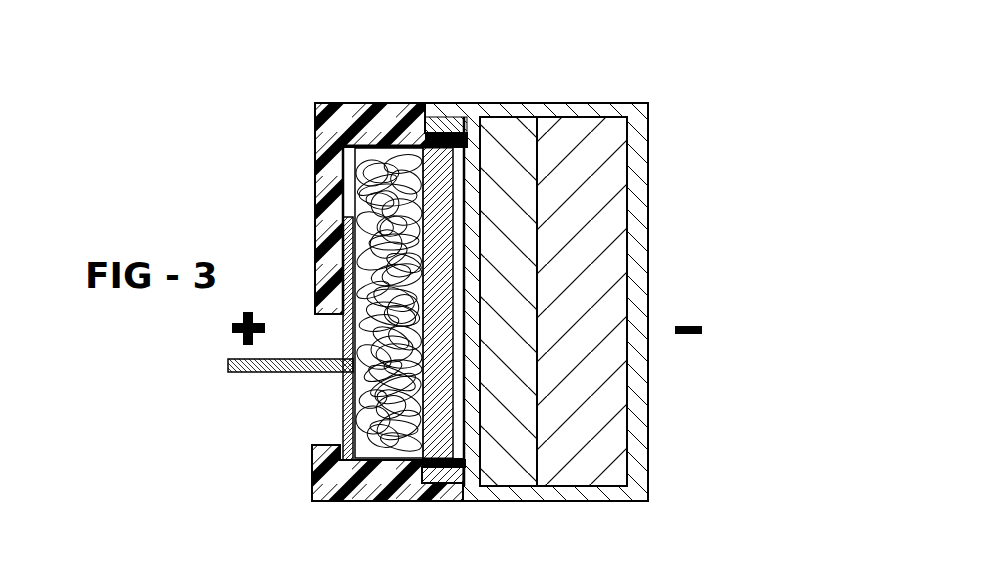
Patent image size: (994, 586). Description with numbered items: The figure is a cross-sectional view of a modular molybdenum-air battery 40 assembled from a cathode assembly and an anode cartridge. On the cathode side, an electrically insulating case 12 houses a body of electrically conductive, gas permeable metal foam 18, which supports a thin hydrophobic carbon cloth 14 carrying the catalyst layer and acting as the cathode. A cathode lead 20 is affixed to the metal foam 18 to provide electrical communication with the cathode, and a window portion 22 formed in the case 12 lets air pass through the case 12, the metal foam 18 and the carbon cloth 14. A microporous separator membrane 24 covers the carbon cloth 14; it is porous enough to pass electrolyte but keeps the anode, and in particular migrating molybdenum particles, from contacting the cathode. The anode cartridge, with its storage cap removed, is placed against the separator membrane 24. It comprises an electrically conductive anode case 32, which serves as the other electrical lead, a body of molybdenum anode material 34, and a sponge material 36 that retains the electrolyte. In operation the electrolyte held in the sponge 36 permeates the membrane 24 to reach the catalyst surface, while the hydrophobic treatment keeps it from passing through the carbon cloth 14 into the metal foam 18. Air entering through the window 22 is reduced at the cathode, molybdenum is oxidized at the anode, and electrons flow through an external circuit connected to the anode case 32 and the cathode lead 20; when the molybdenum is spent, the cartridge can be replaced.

The case 12 is at (312, 471).
The carbon cloth 14 is at (447, 133).
The metal foam 18 is at (364, 180).
The cathode lead 20 is at (253, 373).
The window portion 22 is at (321, 414).
The microporous separator membrane 24 is at (418, 502).
The anode case 32 is at (639, 240).
The anode material 34 is at (596, 434).
The sponge material 36 is at (508, 470).
The molybdenum-air battery 40 is at (544, 92).